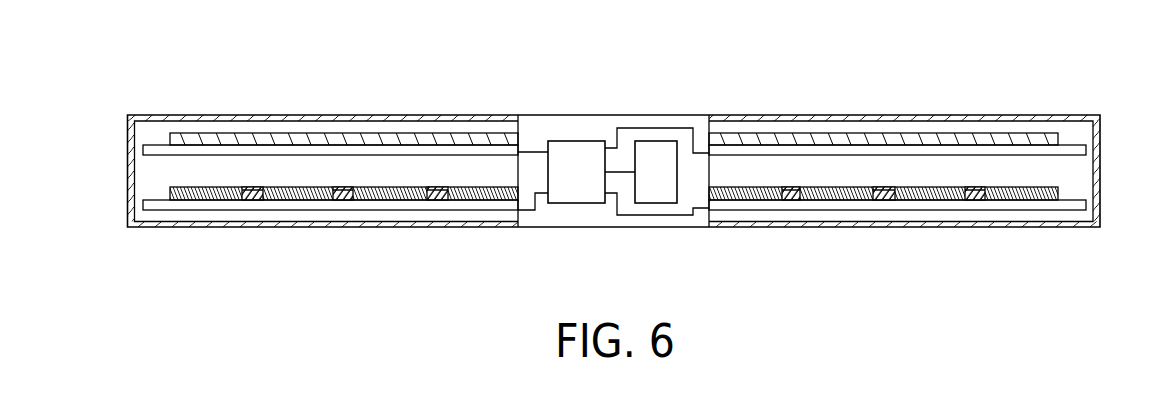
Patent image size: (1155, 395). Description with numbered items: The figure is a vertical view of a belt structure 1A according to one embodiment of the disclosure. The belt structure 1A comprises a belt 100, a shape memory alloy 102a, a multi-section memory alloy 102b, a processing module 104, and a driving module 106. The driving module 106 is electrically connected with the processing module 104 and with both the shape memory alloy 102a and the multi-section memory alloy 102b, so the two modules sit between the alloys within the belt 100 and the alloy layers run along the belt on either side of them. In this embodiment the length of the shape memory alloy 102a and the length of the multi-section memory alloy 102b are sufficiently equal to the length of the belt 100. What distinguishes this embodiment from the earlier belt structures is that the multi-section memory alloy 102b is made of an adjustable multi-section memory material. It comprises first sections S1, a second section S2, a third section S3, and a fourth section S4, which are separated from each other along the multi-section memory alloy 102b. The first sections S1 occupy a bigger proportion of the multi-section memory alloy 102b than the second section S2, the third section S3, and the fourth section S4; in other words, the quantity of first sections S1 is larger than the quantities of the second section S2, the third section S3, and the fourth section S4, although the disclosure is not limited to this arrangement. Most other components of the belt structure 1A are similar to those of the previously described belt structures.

The belt structure 1A is at (618, 179).
The belt 100 is at (982, 115).
The shape memory alloy 102a is at (1058, 140).
The multi-section memory alloy 102b is at (614, 259).
The processing module 104 is at (657, 155).
The driving module 106 is at (578, 155).
The first sections S1 is at (747, 200).
The second section S2 is at (792, 200).
The third section S3 is at (885, 200).
The fourth section S4 is at (980, 235).